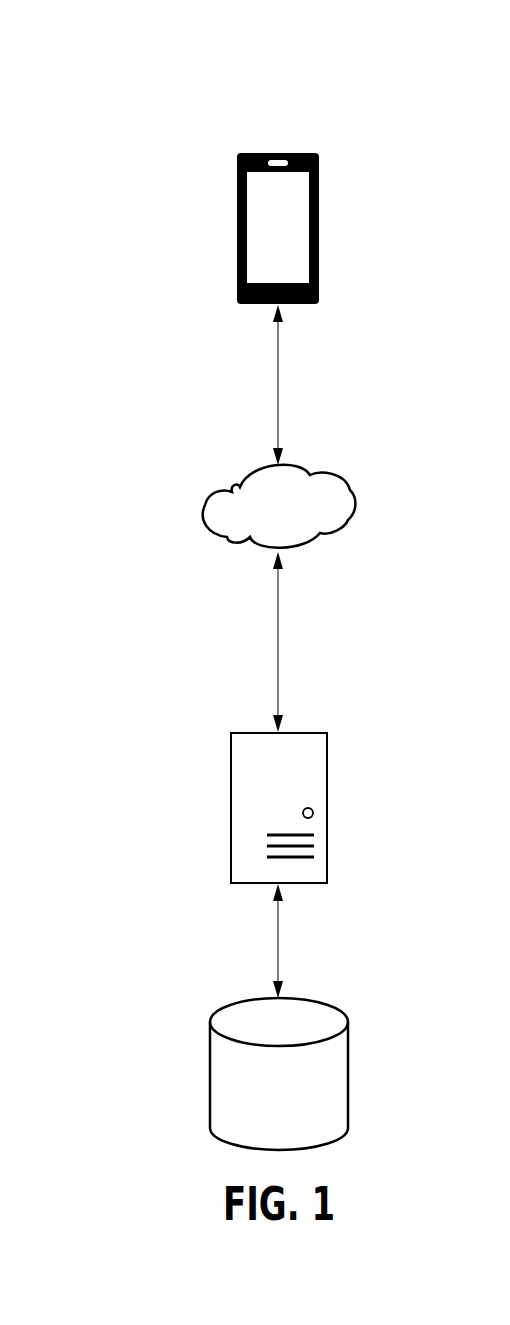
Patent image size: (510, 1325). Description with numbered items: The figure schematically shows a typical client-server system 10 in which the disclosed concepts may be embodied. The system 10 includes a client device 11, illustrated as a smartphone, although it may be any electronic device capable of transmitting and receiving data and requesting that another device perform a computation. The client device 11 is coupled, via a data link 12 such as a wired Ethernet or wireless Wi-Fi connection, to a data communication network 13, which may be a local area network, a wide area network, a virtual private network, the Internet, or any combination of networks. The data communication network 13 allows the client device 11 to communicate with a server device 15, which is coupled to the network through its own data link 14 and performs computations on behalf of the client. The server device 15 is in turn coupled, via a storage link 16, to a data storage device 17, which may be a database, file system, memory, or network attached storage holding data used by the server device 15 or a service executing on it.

The system 10 is at (130, 62).
The client device 11 is at (237, 200).
The data link 12 is at (278, 398).
The data communication network 13 is at (241, 485).
The data link 14 is at (278, 637).
The server device 15 is at (231, 805).
The storage link 16 is at (278, 960).
The data storage device 17 is at (210, 1080).